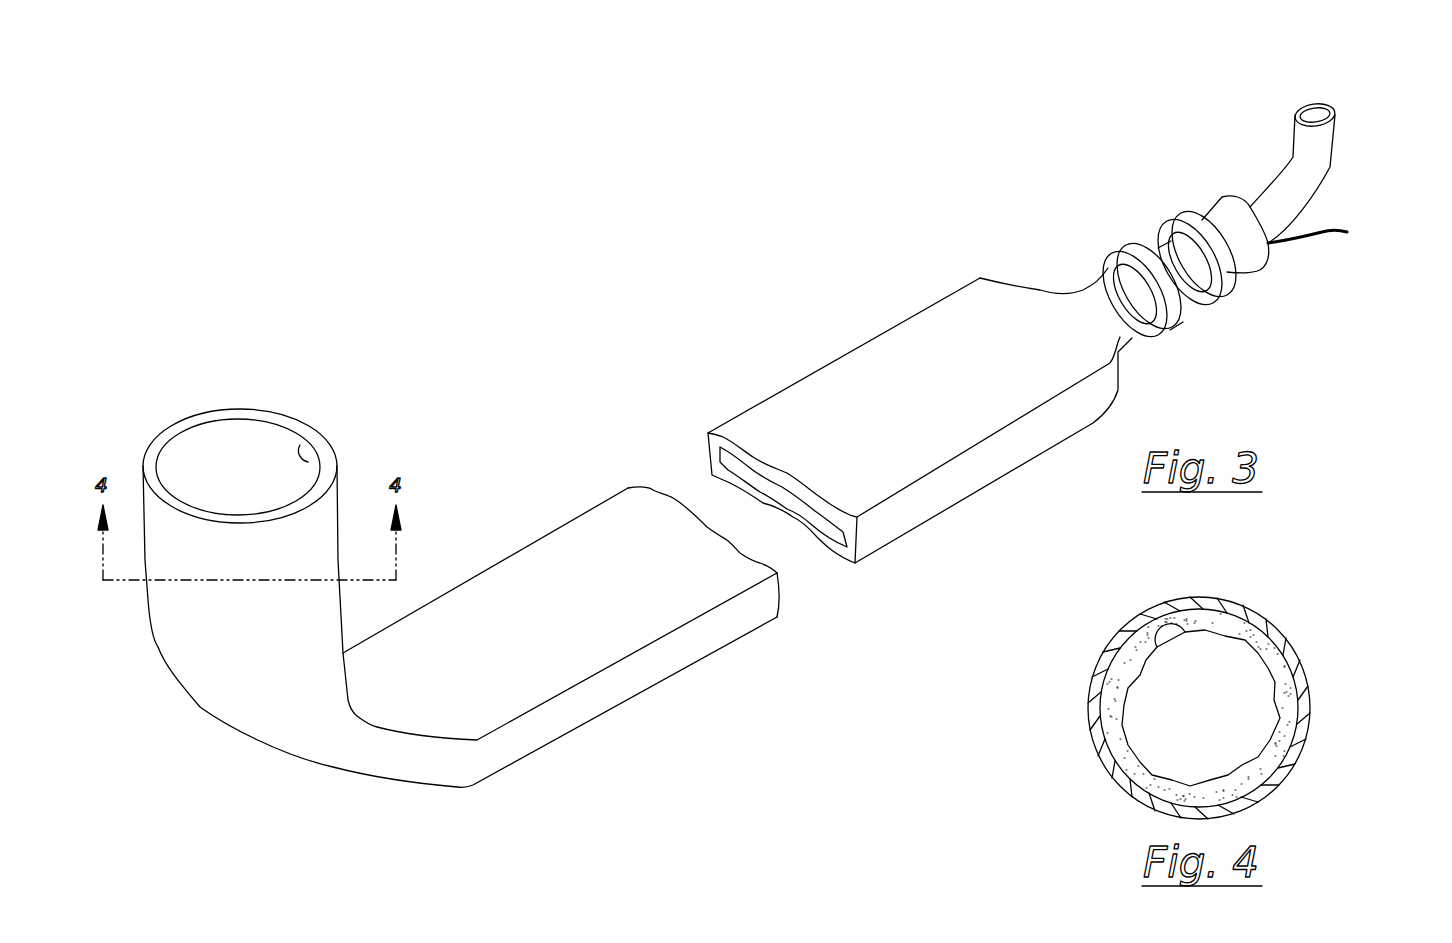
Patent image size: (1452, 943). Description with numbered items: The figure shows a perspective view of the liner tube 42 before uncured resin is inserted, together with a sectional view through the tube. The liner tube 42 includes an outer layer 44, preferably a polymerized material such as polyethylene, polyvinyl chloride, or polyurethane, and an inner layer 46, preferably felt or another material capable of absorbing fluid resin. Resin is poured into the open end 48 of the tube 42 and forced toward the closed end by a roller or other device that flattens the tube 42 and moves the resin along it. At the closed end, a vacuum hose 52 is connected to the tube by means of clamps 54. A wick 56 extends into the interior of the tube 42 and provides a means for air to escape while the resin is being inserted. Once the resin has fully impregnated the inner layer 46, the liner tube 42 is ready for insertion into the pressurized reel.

In FIG. 3, the liner tube 42 is at (552, 503).
In FIG. 4, the liner tube 42 is at (1105, 630).
In FIG. 3, the outer layer 44 is at (322, 508).
In FIG. 4, the outer layer 44 is at (1275, 628).
In FIG. 4, the inner layer 46 is at (1190, 650).
In FIG. 4, the open end 48 is at (1199, 707).
In FIG. 3, the vacuum hose 52 is at (1283, 172).
In FIG. 3, the clamps 54 is at (1180, 222).
In FIG. 3, the wick 56 is at (1333, 227).